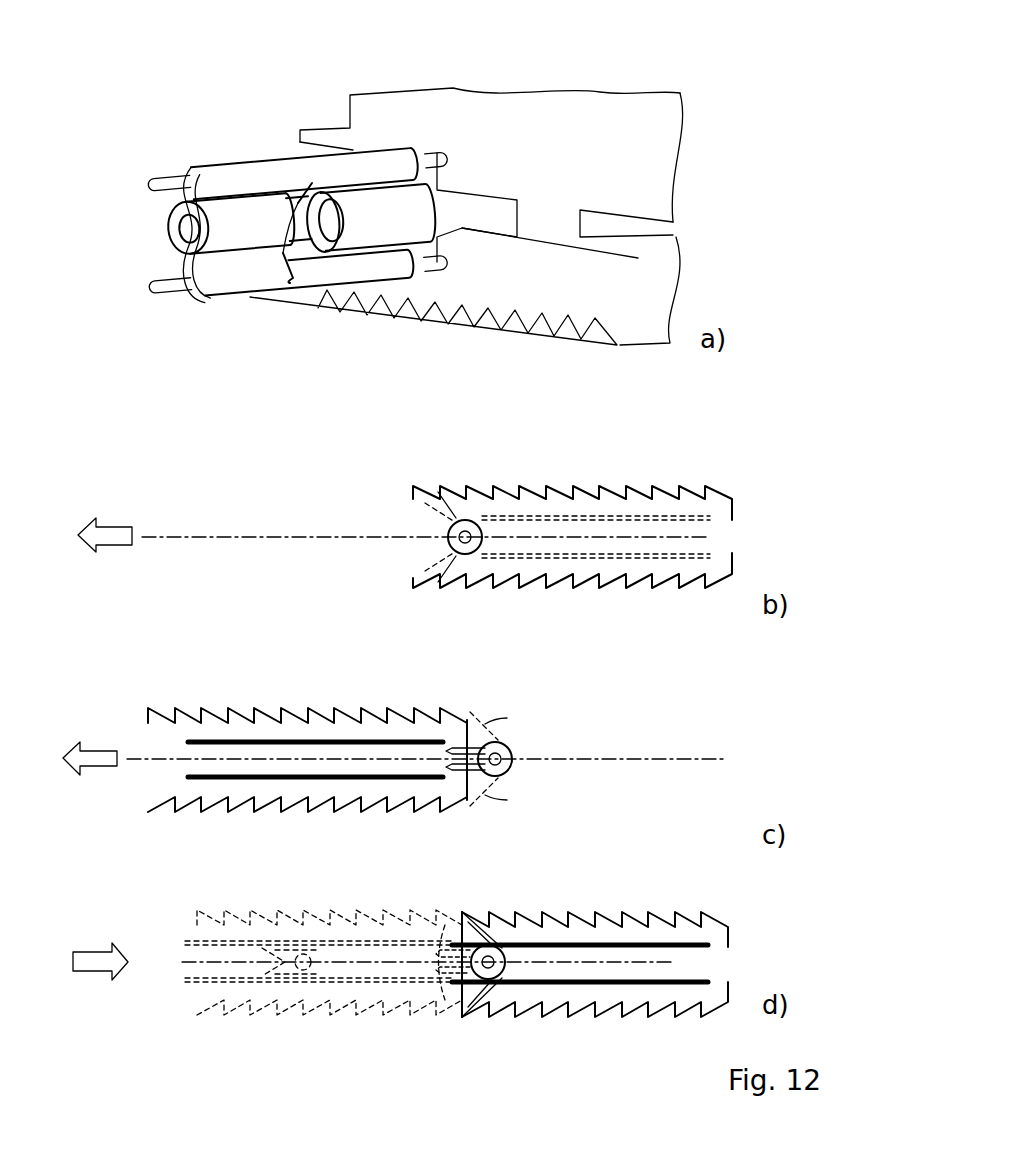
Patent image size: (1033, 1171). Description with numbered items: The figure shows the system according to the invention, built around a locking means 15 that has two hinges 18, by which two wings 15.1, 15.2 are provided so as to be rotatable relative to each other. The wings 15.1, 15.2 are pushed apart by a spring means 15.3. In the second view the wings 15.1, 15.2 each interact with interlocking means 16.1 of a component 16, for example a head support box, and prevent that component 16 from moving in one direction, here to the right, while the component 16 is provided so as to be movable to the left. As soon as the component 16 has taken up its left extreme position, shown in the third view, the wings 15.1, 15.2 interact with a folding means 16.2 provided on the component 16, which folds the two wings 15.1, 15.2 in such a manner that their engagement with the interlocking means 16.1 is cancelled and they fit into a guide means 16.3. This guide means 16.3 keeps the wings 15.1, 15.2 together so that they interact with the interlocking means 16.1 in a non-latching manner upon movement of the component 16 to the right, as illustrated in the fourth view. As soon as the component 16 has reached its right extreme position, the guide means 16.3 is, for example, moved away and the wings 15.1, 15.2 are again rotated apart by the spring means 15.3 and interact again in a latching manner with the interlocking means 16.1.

The locking means 15 is at (256, 112).
The wing 15.1 is at (222, 170).
The wing 15.2 is at (223, 293).
The spring means 15.3 is at (290, 283).
The hinge 18 is at (373, 210).
The component 16 is at (612, 493).
The interlocking means 16.1 is at (690, 498).
The folding means 16.2 is at (465, 800).
The guide means 16.3 is at (290, 740).